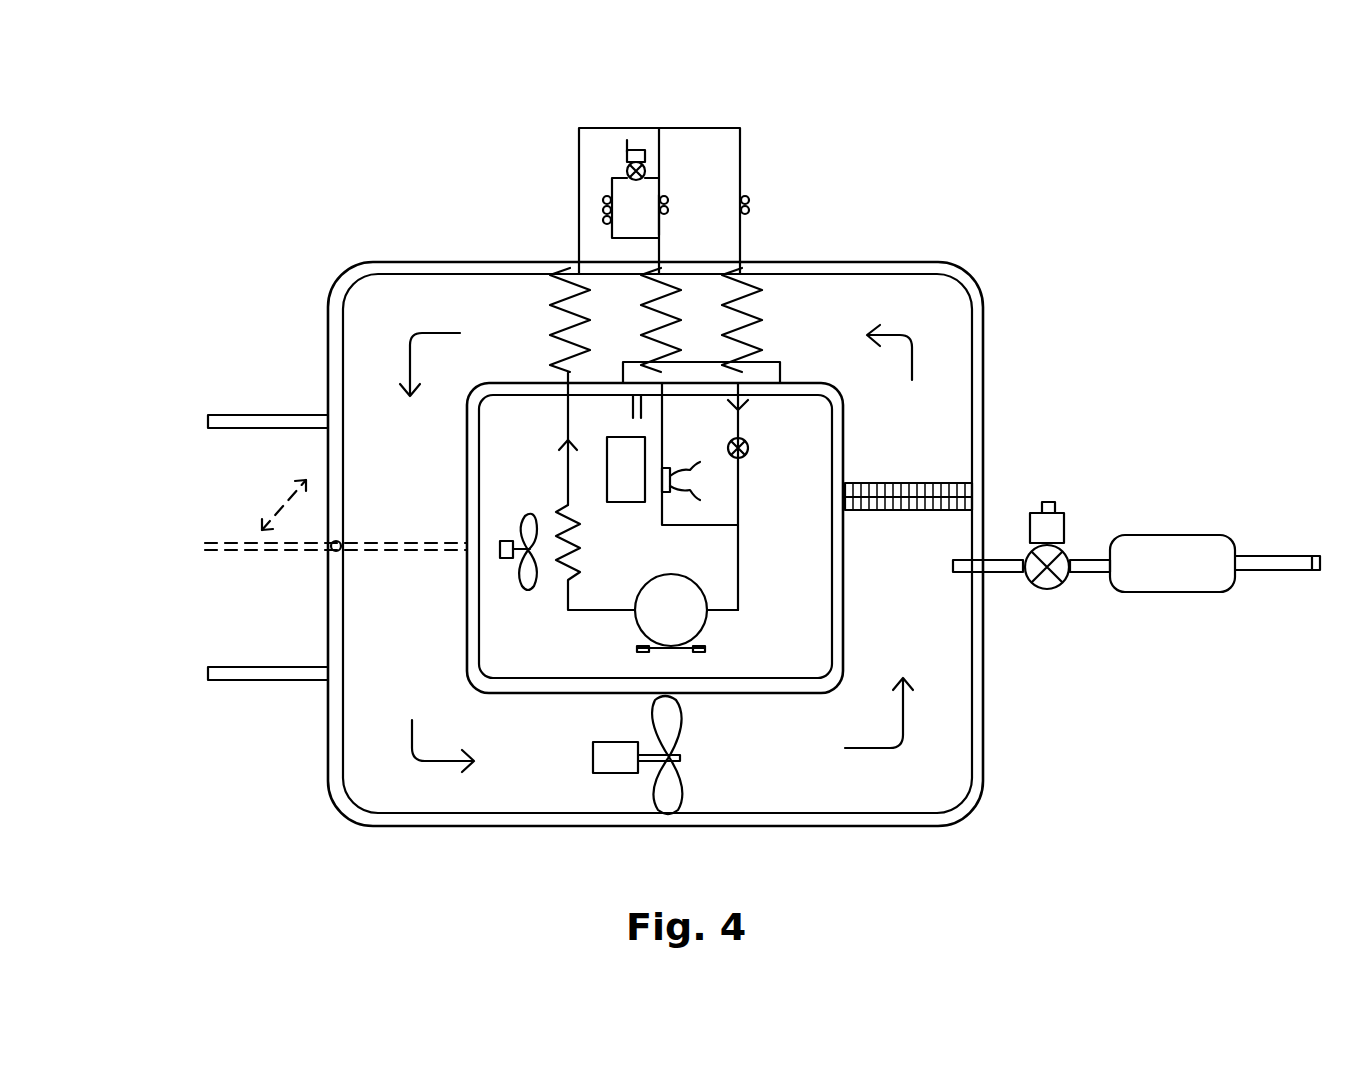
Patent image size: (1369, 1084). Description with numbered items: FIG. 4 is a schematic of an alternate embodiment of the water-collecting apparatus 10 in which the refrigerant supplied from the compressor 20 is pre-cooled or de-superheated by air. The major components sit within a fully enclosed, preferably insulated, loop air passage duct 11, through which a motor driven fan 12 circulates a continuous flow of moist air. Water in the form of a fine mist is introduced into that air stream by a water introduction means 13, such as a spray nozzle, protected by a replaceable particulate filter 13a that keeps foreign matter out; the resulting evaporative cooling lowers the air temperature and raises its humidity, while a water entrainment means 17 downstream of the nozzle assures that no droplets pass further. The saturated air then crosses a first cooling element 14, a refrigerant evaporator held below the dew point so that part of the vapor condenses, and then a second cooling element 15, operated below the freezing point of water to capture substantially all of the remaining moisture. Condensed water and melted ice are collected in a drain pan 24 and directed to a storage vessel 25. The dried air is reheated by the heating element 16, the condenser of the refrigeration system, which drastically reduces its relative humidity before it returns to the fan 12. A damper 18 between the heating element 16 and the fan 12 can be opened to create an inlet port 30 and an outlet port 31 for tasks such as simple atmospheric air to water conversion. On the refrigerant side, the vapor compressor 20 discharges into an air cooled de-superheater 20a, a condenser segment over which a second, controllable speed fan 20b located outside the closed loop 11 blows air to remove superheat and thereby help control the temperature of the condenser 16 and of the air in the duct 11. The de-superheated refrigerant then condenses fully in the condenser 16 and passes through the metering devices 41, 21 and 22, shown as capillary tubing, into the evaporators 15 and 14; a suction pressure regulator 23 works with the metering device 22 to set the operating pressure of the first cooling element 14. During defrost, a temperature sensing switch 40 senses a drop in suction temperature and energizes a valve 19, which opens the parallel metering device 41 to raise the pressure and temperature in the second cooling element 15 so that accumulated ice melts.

The refrigeration system 10 is at (317, 190).
The closed loop air passage duct 11 is at (333, 300).
The air movement means 12 is at (615, 773).
The water introduction means 13 is at (1050, 595).
The replaceable particulate filter 13a is at (1175, 593).
The first air stream cooling element 14 is at (760, 305).
The second air stream cooling element 15 is at (645, 305).
The air stream heating element 16 is at (555, 330).
The water entrainment means 17 is at (940, 483).
The damper 18 is at (338, 628).
The valve 19 is at (628, 150).
The compressor 20 is at (640, 630).
The air cooled de-superheater 20a is at (585, 538).
The second air movement device 20b is at (513, 560).
The first metering device 21 is at (662, 200).
The third metering device 22 is at (748, 240).
The suction pressure regulator 23 is at (755, 455).
The drain pan 24 is at (780, 360).
The storage vessel 25 is at (607, 470).
The inlet port 30 is at (237, 640).
The outlet port 31 is at (228, 448).
The temperature sensing switch 40 is at (670, 492).
The second metering device 41 is at (602, 190).